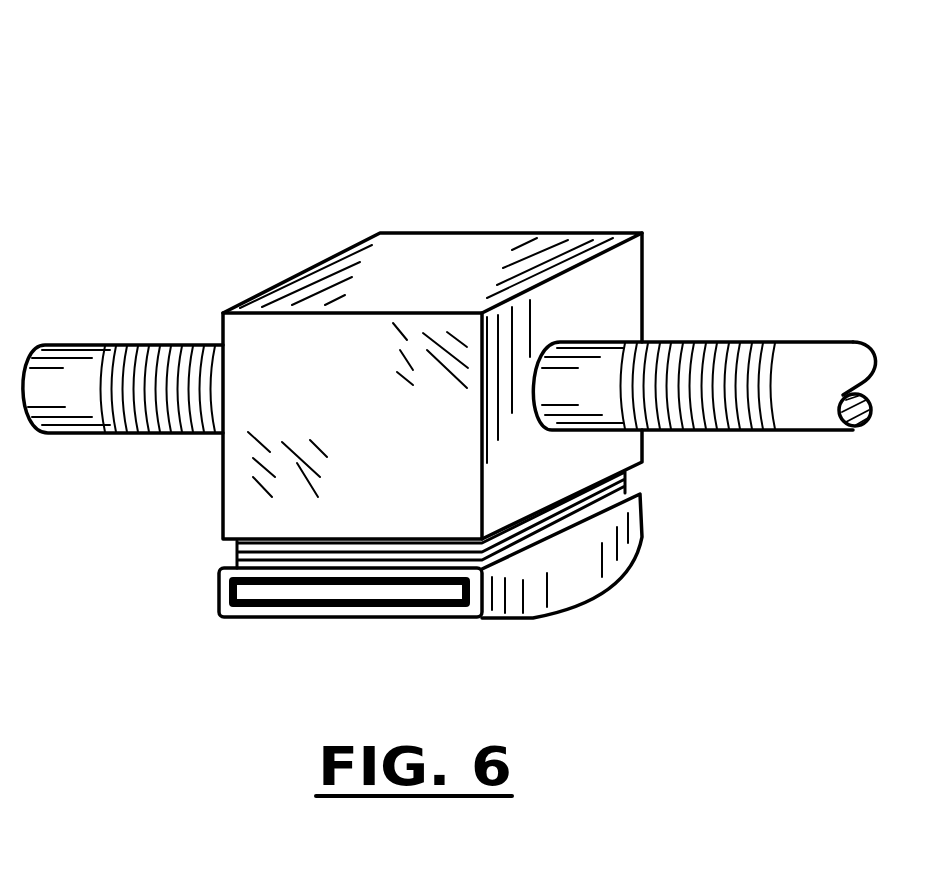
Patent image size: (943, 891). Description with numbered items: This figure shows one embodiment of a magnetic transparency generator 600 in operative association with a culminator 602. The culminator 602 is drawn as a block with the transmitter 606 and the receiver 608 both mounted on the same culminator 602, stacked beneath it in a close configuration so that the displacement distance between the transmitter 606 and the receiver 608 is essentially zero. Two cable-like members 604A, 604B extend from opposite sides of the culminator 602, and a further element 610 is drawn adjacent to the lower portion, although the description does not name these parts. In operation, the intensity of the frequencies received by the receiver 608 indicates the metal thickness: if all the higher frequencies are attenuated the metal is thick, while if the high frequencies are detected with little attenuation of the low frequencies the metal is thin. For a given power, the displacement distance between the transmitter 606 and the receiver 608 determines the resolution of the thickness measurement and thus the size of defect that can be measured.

The magnetic transparency generator 600 is at (398, 180).
The culminator 602 is at (528, 235).
The first optical fiber cable 604A is at (168, 347).
The second optical fiber cable 604B is at (745, 342).
The transmitter 606 is at (623, 475).
The receiver 608 is at (297, 610).
The curved mounting block 610 is at (590, 593).